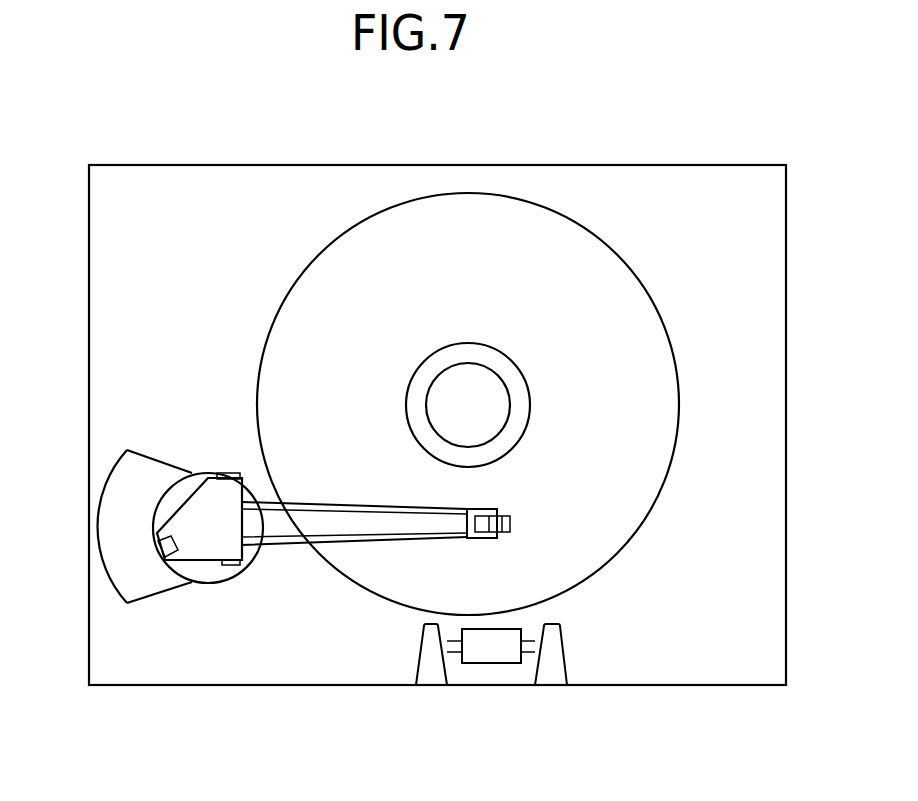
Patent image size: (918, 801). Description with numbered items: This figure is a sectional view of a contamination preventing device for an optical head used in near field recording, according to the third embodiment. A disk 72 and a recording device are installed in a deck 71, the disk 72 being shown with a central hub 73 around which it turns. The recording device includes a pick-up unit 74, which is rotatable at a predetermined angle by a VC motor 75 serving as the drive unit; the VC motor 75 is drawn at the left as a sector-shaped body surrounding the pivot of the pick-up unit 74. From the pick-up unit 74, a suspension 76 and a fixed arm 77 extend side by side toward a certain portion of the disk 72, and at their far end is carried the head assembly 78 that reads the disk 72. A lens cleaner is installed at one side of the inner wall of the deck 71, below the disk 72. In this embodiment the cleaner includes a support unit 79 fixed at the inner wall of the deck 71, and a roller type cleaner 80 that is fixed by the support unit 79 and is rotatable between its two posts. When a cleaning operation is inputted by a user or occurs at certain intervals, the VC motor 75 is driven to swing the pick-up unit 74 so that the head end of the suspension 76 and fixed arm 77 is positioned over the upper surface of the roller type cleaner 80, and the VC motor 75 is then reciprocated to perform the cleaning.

The deck 71 is at (786, 326).
The disk 72 is at (308, 303).
The spindle hub 73 is at (433, 380).
The pick-up unit 74 is at (167, 507).
The VC motor 75 is at (125, 477).
The suspension 76 is at (350, 540).
The fixed arm 77 is at (303, 503).
The head slider 78 is at (483, 507).
The support unit 79 is at (427, 656).
The roller type cleaner 80 is at (495, 655).